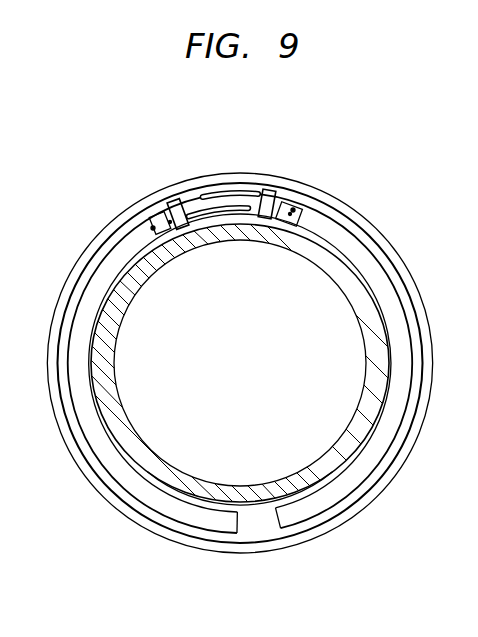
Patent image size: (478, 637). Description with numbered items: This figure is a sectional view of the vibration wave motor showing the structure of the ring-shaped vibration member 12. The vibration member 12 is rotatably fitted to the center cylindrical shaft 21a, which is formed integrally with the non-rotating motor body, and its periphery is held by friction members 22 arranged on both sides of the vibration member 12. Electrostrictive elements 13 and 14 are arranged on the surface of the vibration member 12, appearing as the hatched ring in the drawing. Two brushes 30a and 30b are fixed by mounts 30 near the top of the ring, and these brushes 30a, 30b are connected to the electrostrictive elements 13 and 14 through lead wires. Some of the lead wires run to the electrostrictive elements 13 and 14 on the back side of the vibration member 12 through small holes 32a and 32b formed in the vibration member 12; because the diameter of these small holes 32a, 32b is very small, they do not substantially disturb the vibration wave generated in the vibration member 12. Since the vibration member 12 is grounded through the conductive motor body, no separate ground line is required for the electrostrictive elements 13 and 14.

The vibration member 12 is at (357, 230).
The electrostrictive elements 13 is at (373, 268).
The electrostrictive elements 14 is at (110, 262).
The center cylindrical shaft 21a is at (105, 403).
The friction members 22 is at (234, 209).
The mounts 30 is at (176, 198).
The brush 30a is at (217, 192).
The brush 30b is at (238, 214).
The small hole 32a is at (280, 222).
The small hole 32b is at (170, 192).